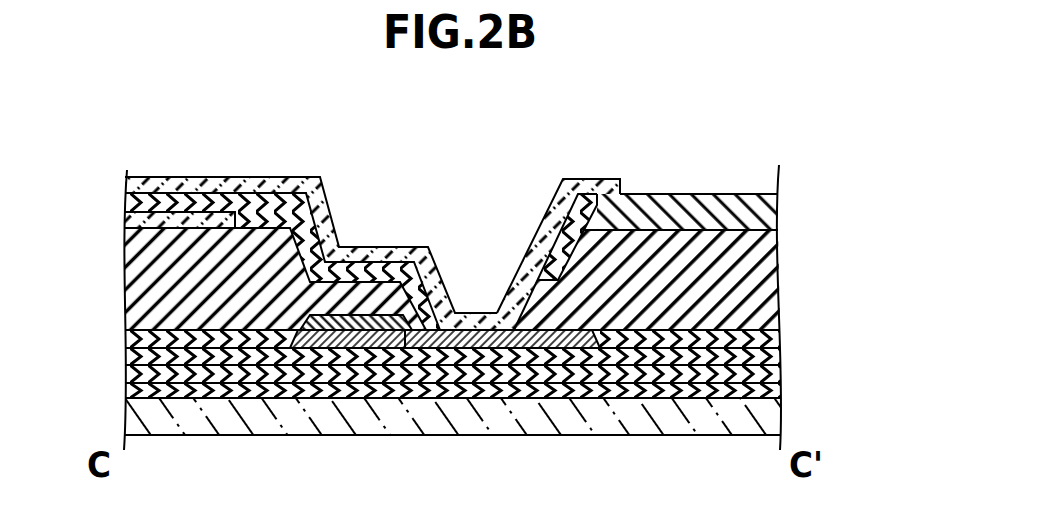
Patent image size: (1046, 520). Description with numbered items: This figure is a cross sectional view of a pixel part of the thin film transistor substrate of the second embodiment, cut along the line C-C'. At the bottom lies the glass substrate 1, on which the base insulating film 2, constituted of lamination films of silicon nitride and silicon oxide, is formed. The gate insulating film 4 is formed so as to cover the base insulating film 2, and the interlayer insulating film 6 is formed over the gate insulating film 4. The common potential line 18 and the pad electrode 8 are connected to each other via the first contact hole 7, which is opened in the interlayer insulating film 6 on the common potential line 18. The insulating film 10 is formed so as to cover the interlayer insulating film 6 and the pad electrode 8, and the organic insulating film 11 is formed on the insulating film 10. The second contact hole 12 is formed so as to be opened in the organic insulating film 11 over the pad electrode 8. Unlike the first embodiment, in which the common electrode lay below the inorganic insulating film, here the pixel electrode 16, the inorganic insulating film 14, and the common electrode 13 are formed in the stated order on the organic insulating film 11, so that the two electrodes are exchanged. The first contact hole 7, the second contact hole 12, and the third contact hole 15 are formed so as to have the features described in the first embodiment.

The glass substrate 1 is at (703, 415).
The base insulating film 2 is at (773, 390).
The gate insulating film 4 is at (773, 370).
The interlayer insulating film 6 is at (772, 356).
The first contact hole 7 is at (338, 333).
The pad electrode 8 is at (573, 343).
The insulating film 10 is at (770, 342).
The organic insulating film 11 is at (755, 259).
The second contact hole 12 is at (294, 262).
The common electrode 13 is at (124, 177).
The inorganic insulating film 14 is at (124, 200).
The third contact hole 15 is at (520, 302).
The pixel electrode 16 is at (120, 220).
The common potential line 18 is at (367, 352).